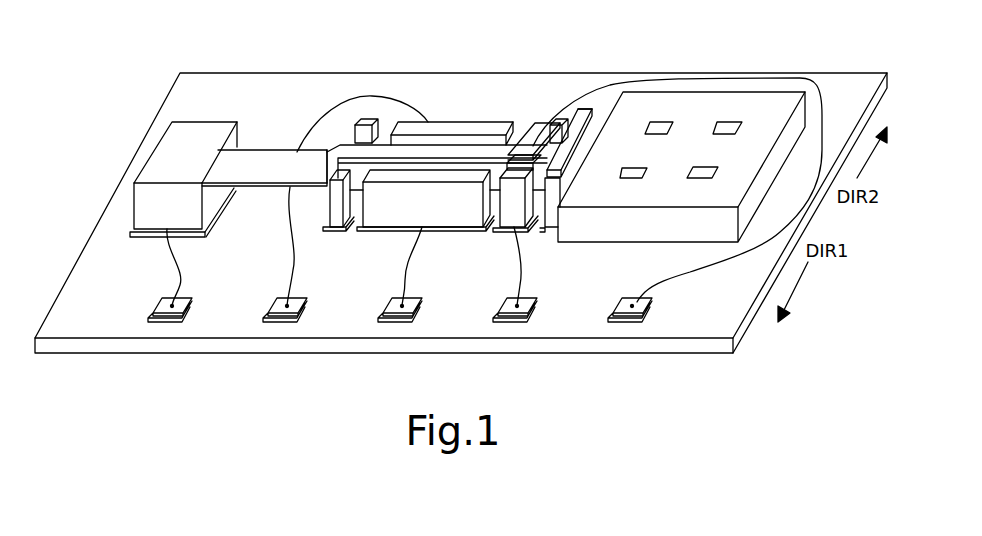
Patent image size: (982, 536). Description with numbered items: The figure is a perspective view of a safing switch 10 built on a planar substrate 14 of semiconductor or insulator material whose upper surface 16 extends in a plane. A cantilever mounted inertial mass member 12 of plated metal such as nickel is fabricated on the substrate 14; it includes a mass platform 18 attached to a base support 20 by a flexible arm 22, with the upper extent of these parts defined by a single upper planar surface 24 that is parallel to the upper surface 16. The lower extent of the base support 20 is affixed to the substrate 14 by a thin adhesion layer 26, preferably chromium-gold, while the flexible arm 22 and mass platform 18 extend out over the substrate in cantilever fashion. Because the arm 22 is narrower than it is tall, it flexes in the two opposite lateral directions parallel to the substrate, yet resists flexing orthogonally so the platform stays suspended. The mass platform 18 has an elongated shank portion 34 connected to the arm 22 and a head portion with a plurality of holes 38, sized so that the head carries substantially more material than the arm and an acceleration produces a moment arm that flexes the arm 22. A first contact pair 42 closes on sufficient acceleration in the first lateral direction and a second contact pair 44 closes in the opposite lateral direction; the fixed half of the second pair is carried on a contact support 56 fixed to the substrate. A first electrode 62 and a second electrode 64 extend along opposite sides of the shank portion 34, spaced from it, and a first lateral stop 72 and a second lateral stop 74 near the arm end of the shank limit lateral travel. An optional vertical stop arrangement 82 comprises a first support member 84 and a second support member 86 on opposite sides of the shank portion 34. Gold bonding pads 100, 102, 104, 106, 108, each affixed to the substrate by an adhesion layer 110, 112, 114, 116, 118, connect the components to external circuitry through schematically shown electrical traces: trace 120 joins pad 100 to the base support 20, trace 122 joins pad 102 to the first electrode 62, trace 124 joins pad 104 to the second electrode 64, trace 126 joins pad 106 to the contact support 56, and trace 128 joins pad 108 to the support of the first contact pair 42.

The safing switch 10 is at (136, 29).
The inertial mass member 12 is at (254, 126).
The substrate 14 is at (96, 353).
The upper surface 16 is at (82, 288).
The mass platform 18 is at (632, 246).
The base support 20 is at (187, 131).
The flexible arm 22 is at (250, 163).
The upper planar surface 24 is at (277, 150).
The adhesion layer 26 is at (142, 237).
The shank portion 34 is at (330, 160).
The holes 38 is at (707, 168).
The first contact pair 42 is at (533, 112).
The second contact pair 44 is at (504, 149).
The contact support 56 is at (513, 203).
The first electrode 62 is at (445, 120).
The second electrode 64 is at (392, 215).
The first lateral stop 72 is at (358, 127).
The second lateral stop 74 is at (336, 200).
The vertical stop arrangement 82 is at (595, 154).
The first support member 84 is at (596, 136).
The second support member 86 is at (569, 180).
The first bonding pad 100 is at (172, 308).
The second bonding pad 102 is at (287, 308).
The third bonding pad 104 is at (402, 308).
The fourth bonding pad 106 is at (517, 308).
The fifth bonding pad 108 is at (632, 308).
The adhesion layer 110 is at (192, 304).
The adhesion layer 112 is at (307, 304).
The adhesion layer 114 is at (422, 304).
The adhesion layer 116 is at (537, 304).
The adhesion layer 118 is at (652, 304).
The electrical trace 120 is at (174, 242).
The electrical trace 122 is at (294, 244).
The electrical trace 124 is at (420, 272).
The electrical trace 126 is at (526, 261).
The electrical trace 128 is at (722, 266).